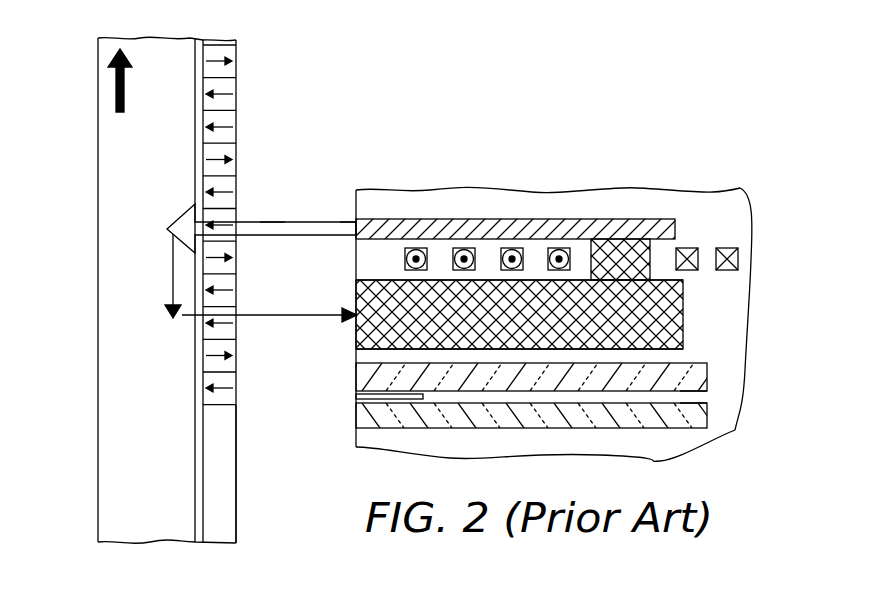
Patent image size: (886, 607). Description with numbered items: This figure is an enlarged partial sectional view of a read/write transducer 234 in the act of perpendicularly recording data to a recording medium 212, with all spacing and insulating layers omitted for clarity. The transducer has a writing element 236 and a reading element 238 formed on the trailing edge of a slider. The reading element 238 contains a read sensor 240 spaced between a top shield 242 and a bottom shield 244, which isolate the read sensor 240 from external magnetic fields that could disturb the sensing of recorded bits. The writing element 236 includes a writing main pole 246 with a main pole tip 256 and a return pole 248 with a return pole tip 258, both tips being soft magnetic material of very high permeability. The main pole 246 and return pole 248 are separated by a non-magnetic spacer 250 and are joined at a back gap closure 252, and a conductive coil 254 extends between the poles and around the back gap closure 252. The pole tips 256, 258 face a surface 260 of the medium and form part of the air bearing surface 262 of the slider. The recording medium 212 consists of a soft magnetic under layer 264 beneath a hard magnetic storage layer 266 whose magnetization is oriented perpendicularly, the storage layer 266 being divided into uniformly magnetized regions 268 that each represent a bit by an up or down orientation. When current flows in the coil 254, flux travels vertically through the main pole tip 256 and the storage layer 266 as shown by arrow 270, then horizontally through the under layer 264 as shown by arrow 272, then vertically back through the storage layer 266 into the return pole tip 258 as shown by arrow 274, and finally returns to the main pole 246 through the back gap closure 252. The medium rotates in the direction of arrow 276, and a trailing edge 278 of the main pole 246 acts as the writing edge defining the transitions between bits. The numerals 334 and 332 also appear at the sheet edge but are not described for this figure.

The recording medium 212 is at (88, 68).
The read/write transducer 234 is at (707, 112).
The writing element 236 is at (698, 233).
The reading element 238 is at (718, 395).
The read sensor 240 is at (353, 397).
The top shield 242 is at (697, 377).
The bottom shield 244 is at (697, 413).
The writing main pole 246 is at (655, 230).
The return pole 248 is at (663, 315).
The non-magnetic spacer 250 is at (354, 281).
The back gap closure 252 is at (622, 260).
The conductive coil 254 is at (512, 248).
The main pole tip 256 is at (353, 243).
The return pole tip 258 is at (353, 337).
The surface 260 is at (237, 433).
The air bearing surface 262 is at (353, 440).
The soft magnetic under layer 264 is at (148, 522).
The storage layer 266 is at (217, 522).
The uniformly magnetized regions 268 is at (228, 120).
The arrow 270 is at (270, 222).
The arrow 272 is at (173, 276).
The arrow 274 is at (262, 315).
The arrow 276 is at (128, 65).
The trailing edge 278 is at (356, 222).
The element 334 is at (718, 606).
The element 332 is at (523, 604).